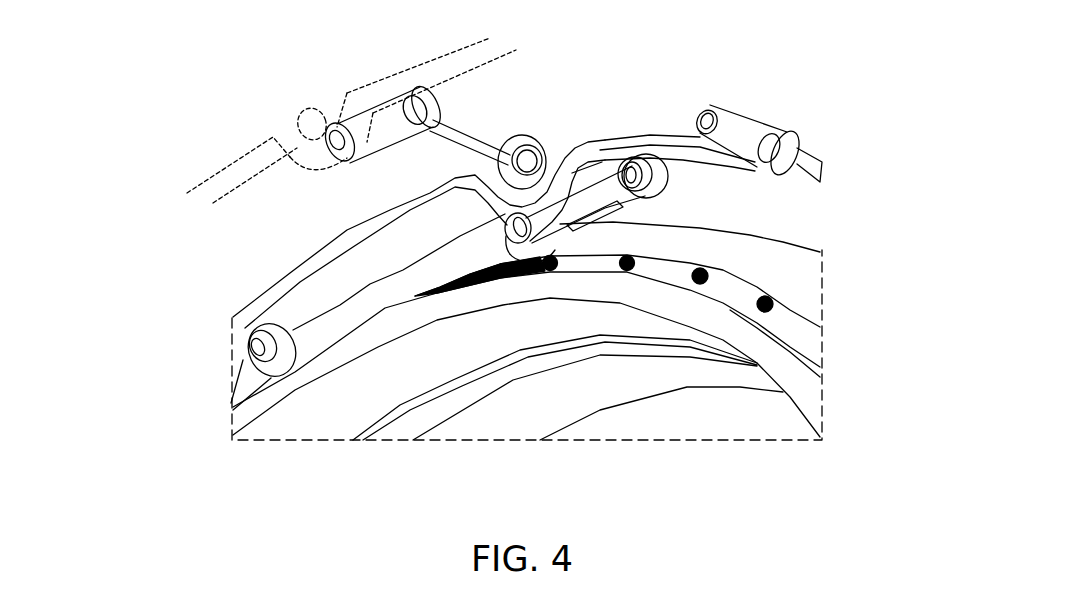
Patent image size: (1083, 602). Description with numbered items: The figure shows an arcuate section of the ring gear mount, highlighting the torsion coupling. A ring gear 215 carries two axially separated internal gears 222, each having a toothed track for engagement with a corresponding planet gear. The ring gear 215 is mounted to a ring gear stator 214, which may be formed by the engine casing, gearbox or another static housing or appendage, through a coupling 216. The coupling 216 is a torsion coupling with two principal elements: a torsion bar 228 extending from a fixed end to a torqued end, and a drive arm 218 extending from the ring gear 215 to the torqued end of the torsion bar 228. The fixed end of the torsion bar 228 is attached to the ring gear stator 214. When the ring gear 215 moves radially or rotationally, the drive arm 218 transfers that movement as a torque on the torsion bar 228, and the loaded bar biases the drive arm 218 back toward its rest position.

The ring gear stator 214 is at (666, 110).
The ring gear 215 is at (628, 418).
The coupling 216 is at (466, 206).
The drive arm 218 is at (600, 186).
The internal gears 222 is at (325, 418).
The torsion bar 228 is at (493, 140).